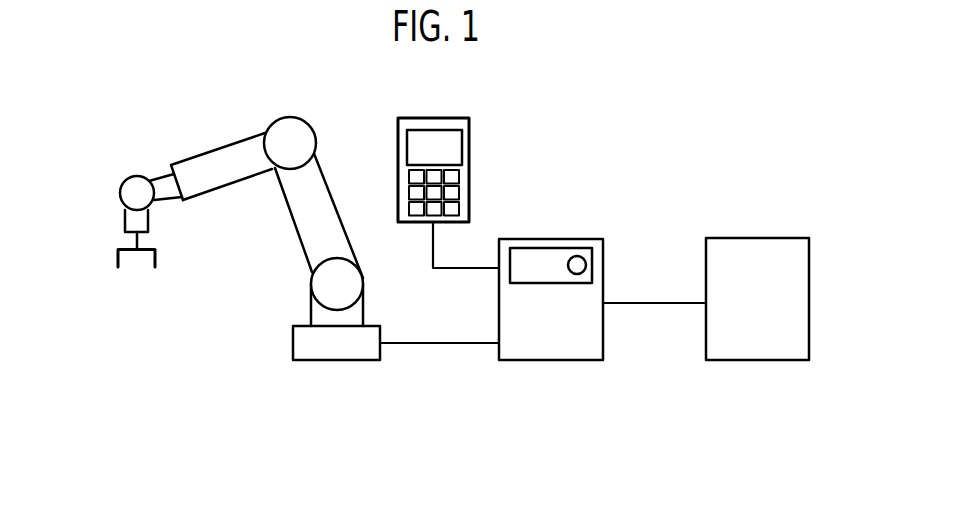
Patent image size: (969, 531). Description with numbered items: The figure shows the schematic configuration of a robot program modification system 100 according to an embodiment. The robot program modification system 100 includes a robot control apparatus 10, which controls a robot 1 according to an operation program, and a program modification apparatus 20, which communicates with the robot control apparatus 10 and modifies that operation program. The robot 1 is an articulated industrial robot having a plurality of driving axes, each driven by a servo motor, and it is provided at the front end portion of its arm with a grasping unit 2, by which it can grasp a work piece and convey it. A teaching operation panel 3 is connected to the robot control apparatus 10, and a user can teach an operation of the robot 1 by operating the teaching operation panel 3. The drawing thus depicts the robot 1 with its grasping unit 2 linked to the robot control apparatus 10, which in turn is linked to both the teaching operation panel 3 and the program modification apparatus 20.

The robot 1 is at (270, 283).
The grasping unit 2 is at (117, 253).
The teaching operation panel 3 is at (469, 140).
The robot control apparatus 10 is at (570, 361).
The program modification apparatus 20 is at (783, 361).
The robot program modification system 100 is at (618, 158).